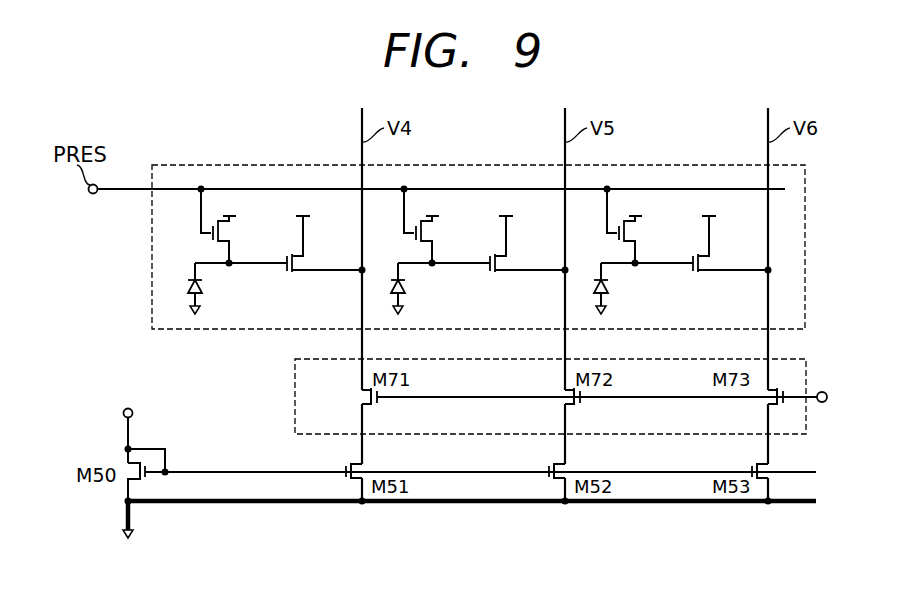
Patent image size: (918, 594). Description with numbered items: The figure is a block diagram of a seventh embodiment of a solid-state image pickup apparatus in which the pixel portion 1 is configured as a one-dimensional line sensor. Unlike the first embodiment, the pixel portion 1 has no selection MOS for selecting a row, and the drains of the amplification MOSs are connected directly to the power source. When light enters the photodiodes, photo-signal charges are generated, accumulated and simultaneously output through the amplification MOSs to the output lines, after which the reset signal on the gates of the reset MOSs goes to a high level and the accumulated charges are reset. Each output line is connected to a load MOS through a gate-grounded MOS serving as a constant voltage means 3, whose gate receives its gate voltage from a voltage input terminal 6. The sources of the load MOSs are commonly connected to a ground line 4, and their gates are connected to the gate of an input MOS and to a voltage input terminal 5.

The pixel portion 1 is at (205, 165).
The constant voltage means 3 is at (293, 378).
The GND line 4 is at (125, 522).
The voltage input terminal 5 is at (133, 410).
The voltage input terminal 6 is at (828, 394).